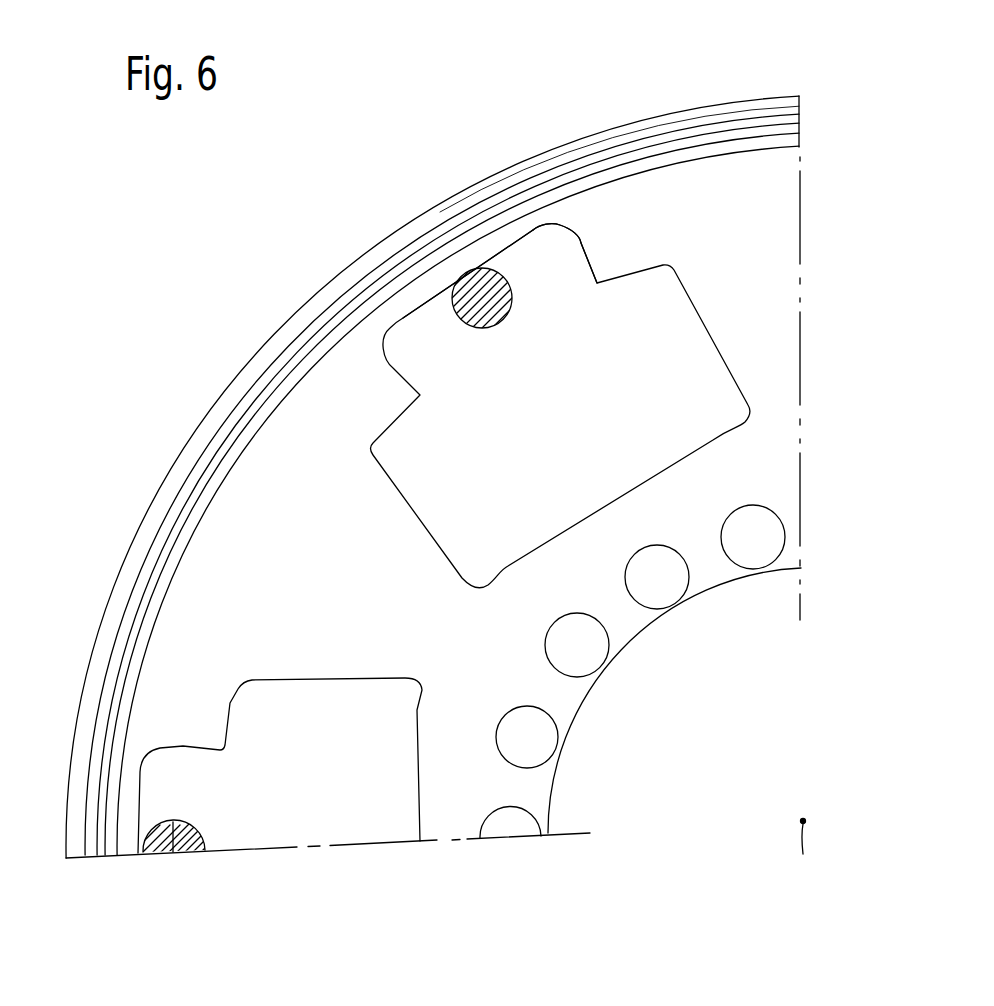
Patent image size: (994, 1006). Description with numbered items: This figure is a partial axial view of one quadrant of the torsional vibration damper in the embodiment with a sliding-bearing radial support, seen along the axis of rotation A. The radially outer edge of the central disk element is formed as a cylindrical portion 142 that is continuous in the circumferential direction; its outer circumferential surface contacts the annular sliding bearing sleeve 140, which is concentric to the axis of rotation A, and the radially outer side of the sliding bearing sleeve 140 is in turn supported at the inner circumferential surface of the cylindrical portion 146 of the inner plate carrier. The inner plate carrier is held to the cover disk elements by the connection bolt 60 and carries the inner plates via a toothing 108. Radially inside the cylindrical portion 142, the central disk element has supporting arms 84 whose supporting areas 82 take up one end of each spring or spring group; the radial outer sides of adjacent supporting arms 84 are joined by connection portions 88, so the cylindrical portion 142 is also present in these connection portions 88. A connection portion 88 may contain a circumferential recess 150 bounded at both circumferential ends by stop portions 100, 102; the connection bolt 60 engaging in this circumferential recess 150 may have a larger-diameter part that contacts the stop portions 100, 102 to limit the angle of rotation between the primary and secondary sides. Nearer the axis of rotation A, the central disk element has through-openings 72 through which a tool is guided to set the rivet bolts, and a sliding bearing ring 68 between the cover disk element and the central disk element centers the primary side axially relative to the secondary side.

The connection bolt 60 is at (505, 268).
The sliding bearing ring 68 is at (468, 825).
The through-opening 72 is at (660, 583).
The supporting area 82 is at (727, 217).
The supporting arm 84 is at (323, 637).
The connection portion 88 is at (457, 267).
The stop portion 100 is at (393, 373).
The stop portion 102 is at (586, 243).
The toothing 108 is at (148, 524).
The sliding bearing sleeve 140 is at (770, 132).
The cylindrical portion 142 is at (415, 267).
The cylindrical portion 146 is at (246, 398).
The circumferential recess 150 is at (423, 322).
The axis of rotation A is at (804, 848).